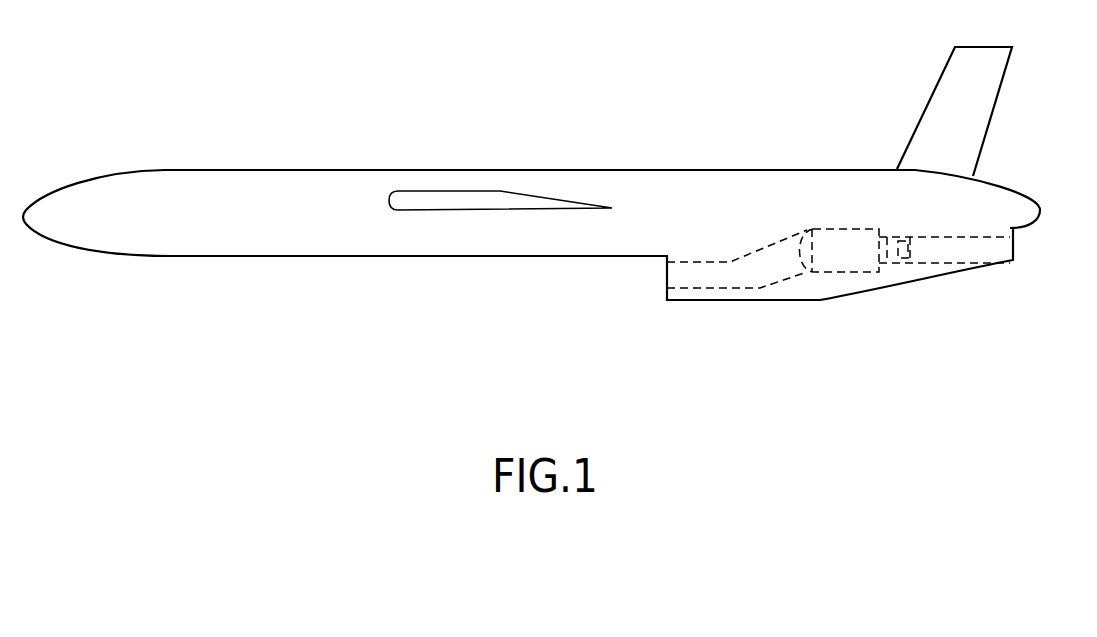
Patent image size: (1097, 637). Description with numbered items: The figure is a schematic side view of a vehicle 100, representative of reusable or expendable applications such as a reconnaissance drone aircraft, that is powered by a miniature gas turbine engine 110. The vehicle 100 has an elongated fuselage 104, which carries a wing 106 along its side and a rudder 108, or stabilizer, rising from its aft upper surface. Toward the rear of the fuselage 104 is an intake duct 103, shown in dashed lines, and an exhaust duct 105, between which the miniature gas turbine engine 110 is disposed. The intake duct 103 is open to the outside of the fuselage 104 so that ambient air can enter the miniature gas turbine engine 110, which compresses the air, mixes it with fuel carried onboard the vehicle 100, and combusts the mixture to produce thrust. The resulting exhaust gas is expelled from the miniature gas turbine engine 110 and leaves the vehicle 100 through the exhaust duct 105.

The vehicle 100 is at (602, 144).
The intake duct 103 is at (728, 277).
The fuselage 104 is at (243, 169).
The exhaust duct 105 is at (947, 258).
The wing 106 is at (457, 210).
The rudder 108 is at (977, 124).
The miniature gas turbine engine 110 is at (838, 232).